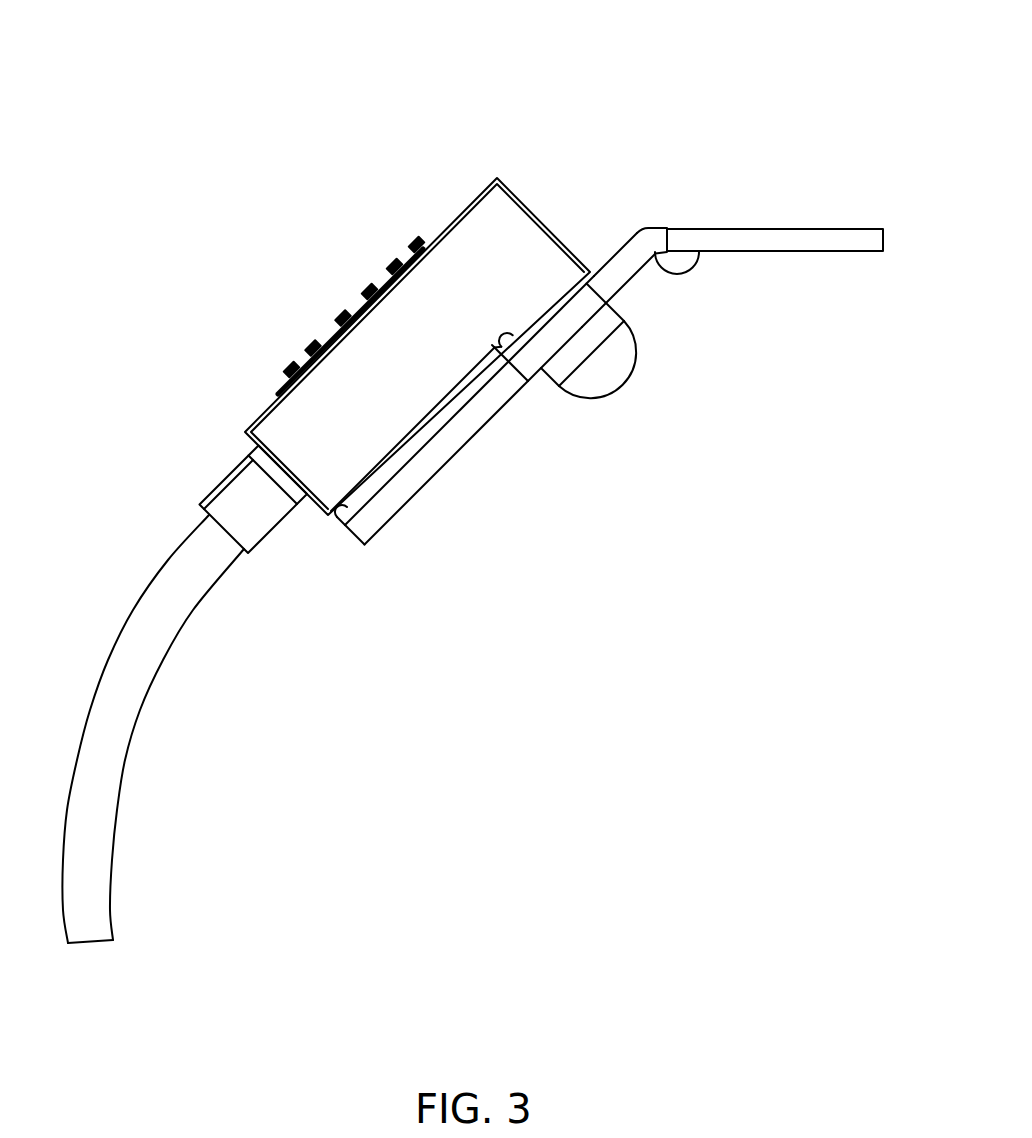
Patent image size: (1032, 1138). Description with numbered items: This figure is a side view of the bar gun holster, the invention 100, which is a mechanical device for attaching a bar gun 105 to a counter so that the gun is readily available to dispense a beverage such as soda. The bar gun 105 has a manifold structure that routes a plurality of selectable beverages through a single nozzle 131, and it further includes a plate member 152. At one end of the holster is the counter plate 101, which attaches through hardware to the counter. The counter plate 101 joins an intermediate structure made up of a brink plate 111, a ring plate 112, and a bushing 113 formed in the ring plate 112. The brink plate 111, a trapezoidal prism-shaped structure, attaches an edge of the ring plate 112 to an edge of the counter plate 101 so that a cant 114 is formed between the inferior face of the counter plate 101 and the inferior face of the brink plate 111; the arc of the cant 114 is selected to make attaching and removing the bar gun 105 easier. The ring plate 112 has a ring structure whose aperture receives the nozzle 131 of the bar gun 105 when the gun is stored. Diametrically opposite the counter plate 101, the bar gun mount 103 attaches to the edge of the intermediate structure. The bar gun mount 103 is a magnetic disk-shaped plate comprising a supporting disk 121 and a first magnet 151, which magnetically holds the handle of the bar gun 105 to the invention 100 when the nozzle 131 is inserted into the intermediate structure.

The invention 100 is at (594, 108).
The counter plate 101 is at (777, 240).
The bar gun mount 103 is at (390, 527).
The bar gun 105 is at (388, 250).
The brink plate 111 is at (661, 244).
The ring plate 112 is at (627, 276).
The bushing 113 is at (537, 358).
The cant 114 is at (662, 278).
The supporting disk 121 is at (415, 481).
The nozzle 131 is at (618, 390).
The first magnet 151 is at (433, 432).
The plate member 152 is at (343, 518).